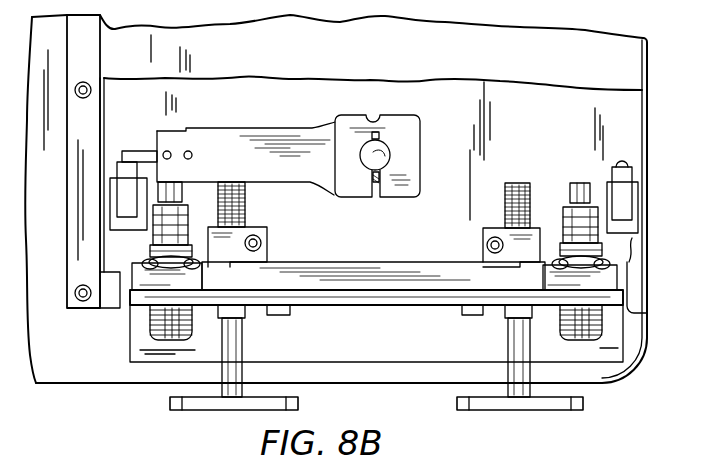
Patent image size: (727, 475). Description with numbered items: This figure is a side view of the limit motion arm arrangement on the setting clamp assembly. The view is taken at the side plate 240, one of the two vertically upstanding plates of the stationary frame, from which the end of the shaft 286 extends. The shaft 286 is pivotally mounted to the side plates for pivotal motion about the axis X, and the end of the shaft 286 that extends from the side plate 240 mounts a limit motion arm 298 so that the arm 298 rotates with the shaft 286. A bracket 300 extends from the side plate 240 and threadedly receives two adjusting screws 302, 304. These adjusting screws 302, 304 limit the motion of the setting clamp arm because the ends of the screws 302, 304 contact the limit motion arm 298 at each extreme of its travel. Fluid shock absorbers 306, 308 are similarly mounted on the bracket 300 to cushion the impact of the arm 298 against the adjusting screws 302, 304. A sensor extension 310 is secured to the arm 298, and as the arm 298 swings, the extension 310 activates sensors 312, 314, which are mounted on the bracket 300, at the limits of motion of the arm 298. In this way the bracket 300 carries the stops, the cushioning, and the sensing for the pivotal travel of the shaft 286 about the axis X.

The plate 240 is at (572, 63).
The shaft 286 is at (382, 148).
The limit motion arm 298 is at (271, 148).
The bracket 300 is at (383, 305).
The adjusting screw 302 is at (243, 345).
The adjusting screw 304 is at (518, 338).
The fluid shock absorber 306 is at (165, 213).
The fluid shock absorber 308 is at (563, 210).
The sensor extension 310 is at (135, 150).
The sensor 312 is at (112, 193).
The sensor 314 is at (628, 173).
The axis X— X is at (380, 156).